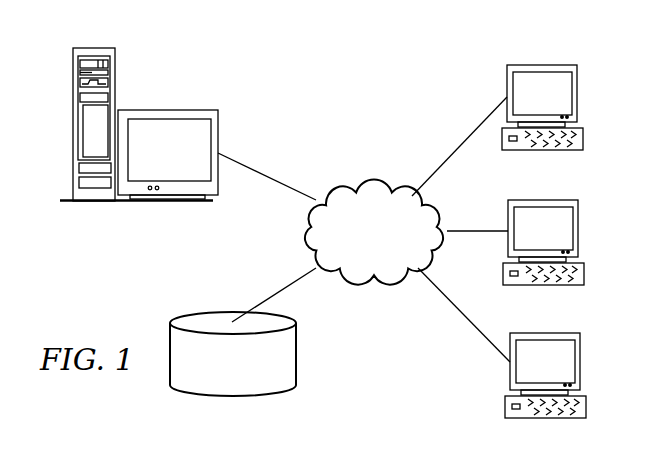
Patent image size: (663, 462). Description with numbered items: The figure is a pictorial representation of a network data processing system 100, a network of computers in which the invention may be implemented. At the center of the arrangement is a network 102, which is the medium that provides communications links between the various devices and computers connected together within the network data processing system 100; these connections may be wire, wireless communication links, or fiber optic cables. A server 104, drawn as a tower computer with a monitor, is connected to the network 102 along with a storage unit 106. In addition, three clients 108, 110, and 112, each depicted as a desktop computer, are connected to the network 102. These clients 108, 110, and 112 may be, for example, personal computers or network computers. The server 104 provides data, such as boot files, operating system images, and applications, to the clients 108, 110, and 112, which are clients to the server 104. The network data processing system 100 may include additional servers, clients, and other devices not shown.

The network data processing system 100 is at (420, 74).
The network 102 is at (345, 183).
The server 104 is at (73, 128).
The storage unit 106 is at (215, 395).
The client 108 is at (578, 93).
The client 110 is at (580, 228).
The client 112 is at (582, 362).